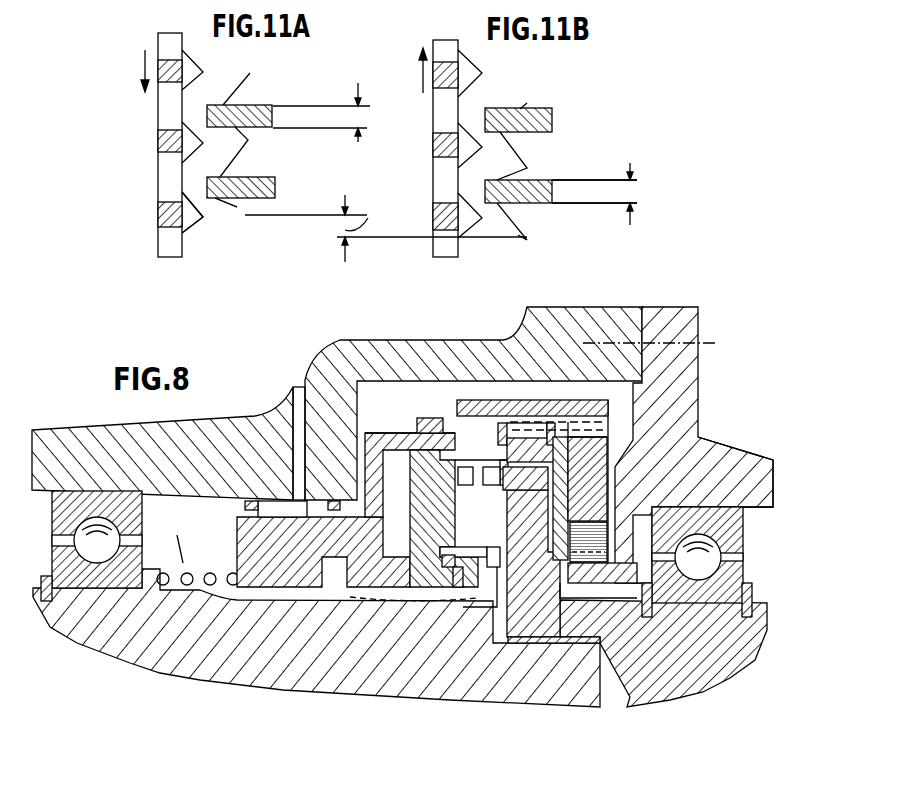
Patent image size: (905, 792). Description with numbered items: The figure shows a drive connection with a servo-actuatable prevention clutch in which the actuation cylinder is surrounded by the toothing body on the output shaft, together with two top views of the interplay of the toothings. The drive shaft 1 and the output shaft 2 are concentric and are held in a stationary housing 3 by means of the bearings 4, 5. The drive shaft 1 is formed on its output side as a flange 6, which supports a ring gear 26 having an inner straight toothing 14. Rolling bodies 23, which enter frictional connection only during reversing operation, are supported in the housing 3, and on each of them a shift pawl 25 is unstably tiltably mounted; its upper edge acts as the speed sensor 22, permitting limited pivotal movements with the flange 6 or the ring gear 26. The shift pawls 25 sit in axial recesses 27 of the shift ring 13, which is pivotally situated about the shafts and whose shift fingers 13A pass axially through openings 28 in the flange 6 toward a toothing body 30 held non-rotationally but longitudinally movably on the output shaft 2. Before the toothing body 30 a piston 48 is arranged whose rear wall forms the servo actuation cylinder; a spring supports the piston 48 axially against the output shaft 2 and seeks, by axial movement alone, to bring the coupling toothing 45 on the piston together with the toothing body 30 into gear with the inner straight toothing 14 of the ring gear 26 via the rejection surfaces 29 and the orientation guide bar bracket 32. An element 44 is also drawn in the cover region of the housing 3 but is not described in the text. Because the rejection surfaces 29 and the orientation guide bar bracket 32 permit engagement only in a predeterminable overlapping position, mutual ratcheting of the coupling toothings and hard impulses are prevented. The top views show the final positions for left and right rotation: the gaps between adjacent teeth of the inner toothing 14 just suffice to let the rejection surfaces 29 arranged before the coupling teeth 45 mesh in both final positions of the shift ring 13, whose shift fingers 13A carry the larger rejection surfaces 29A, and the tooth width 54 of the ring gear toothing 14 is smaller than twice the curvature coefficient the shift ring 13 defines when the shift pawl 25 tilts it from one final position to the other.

In FIG. 8, the drive shaft 1 is at (693, 653).
In FIG. 8, the output shaft 2 is at (133, 632).
In FIG. 8, the housing 3 is at (667, 343).
In FIG. 8, the bearing 4 is at (698, 522).
In FIG. 8, the bearing 5 is at (50, 560).
In FIG. 8, the flange 6 is at (495, 585).
In FIG. 8, the shift ring 13 is at (557, 535).
In FIG. 8, the shift fingers 13A is at (500, 403).
In FIG. 11A, the shift fingers 13A is at (238, 159).
In FIG. 11B, the shift fingers 13A is at (518, 158).
In FIG. 8, the inner straight toothing 14 is at (468, 420).
In FIG. 11A, the inner straight toothing 14 is at (262, 188).
In FIG. 11B, the inner straight toothing 14 is at (556, 181).
In FIG. 8, the speed sensor 22 is at (595, 425).
In FIG. 8, the rolling bodies 23 is at (587, 545).
In FIG. 8, the shift pawl 25 is at (710, 442).
In FIG. 8, the ring gear 26 is at (608, 400).
In FIG. 8, the axial recesses 27 is at (590, 473).
In FIG. 8, the openings 28 is at (562, 470).
In FIG. 8, the rejection surfaces 29 is at (489, 482).
In FIG. 11A, the rejection surfaces 29 is at (190, 201).
In FIG. 11A, the rejection surfaces 29A is at (234, 205).
In FIG. 8, the toothing body 30 is at (415, 572).
In FIG. 11A, the toothing body 30 is at (168, 107).
In FIG. 8, the orientation guide bar bracket 32 is at (470, 558).
In FIG. 8, the pin 44 is at (296, 392).
In FIG. 8, the coupling toothing 45 is at (428, 432).
In FIG. 11A, the coupling toothing 45 is at (162, 147).
In FIG. 11B, the coupling toothing 45 is at (442, 65).
In FIG. 8, the piston 48 is at (387, 437).
In FIG. 11A, the tooth width 54 is at (363, 117).
In FIG. 11B, the tooth width 54 is at (633, 192).